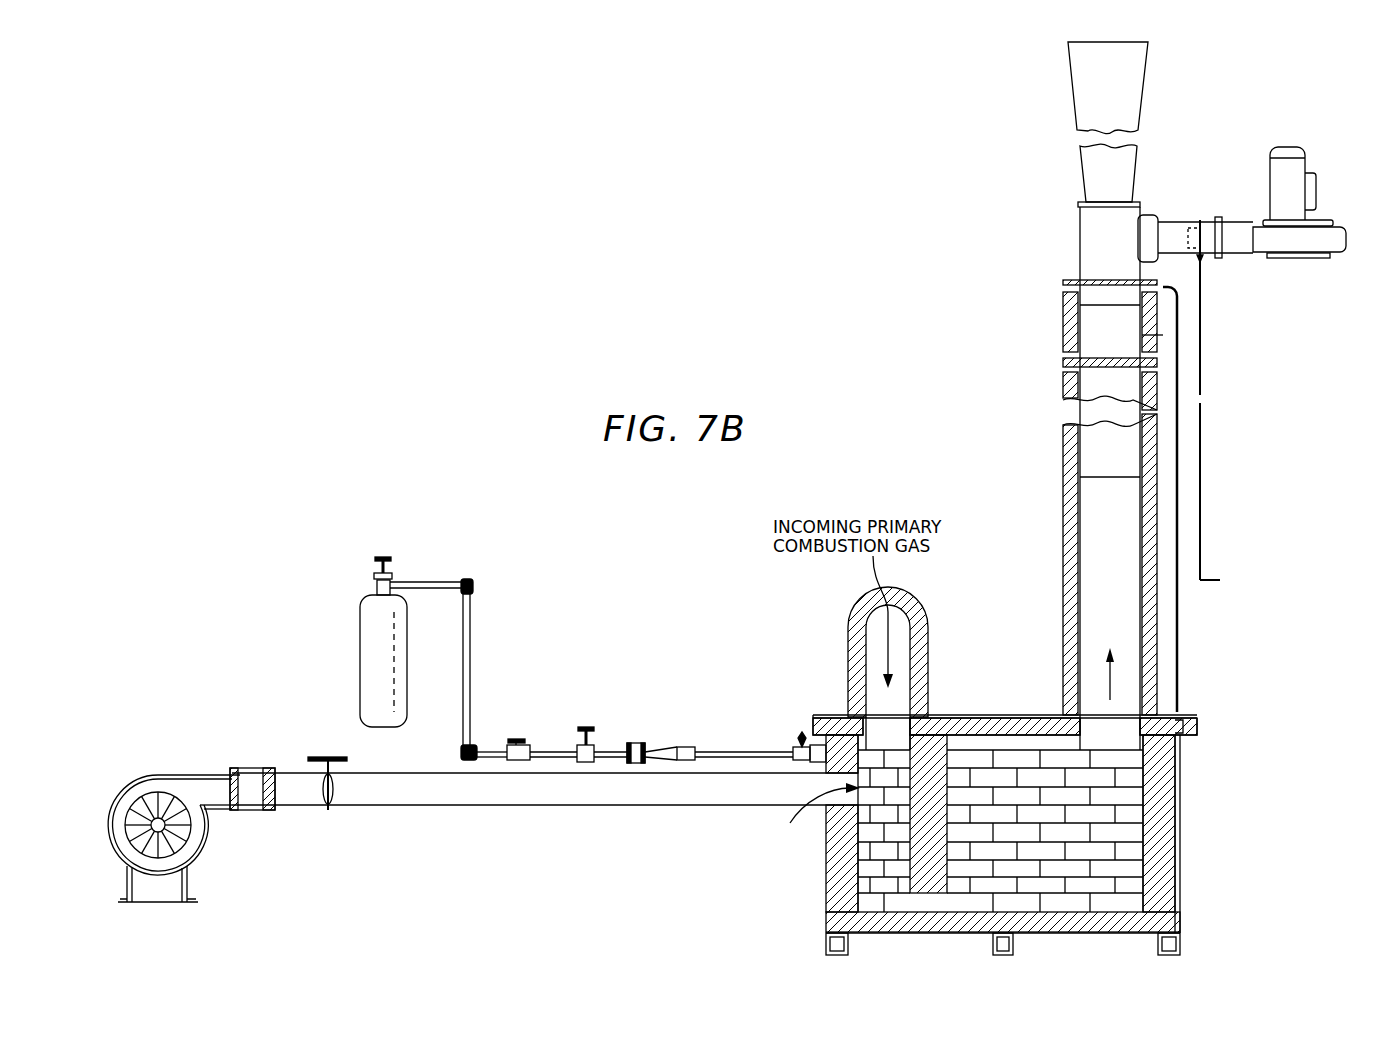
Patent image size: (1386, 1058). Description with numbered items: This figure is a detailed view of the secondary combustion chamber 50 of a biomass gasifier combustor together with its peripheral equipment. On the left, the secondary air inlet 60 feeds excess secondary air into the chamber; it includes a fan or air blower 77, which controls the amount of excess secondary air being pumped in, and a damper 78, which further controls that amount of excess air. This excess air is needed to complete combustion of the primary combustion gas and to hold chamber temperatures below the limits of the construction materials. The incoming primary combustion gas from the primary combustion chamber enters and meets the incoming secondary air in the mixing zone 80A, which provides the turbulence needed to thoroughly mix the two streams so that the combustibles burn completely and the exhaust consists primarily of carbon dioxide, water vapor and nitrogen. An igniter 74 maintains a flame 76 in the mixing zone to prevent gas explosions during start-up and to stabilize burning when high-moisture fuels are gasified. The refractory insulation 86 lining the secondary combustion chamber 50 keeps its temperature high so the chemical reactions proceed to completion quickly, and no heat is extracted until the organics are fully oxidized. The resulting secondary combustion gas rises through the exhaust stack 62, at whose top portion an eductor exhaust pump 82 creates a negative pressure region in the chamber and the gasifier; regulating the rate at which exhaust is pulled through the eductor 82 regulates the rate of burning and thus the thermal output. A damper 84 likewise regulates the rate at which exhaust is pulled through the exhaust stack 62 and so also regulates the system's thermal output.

The secondary combustion chamber 50 is at (1167, 838).
The secondary air inlet 60 is at (545, 803).
The exhaust stack 62 is at (1180, 638).
The igniter 74 is at (540, 735).
The flame 76 is at (878, 760).
The fan or air blower 77 is at (145, 774).
The damper 78 is at (316, 756).
The mixing zone 80A is at (868, 852).
The eductor exhaust pump 82 is at (1095, 246).
The damper 84 is at (1200, 248).
The refractory insulation 86 is at (1153, 810).